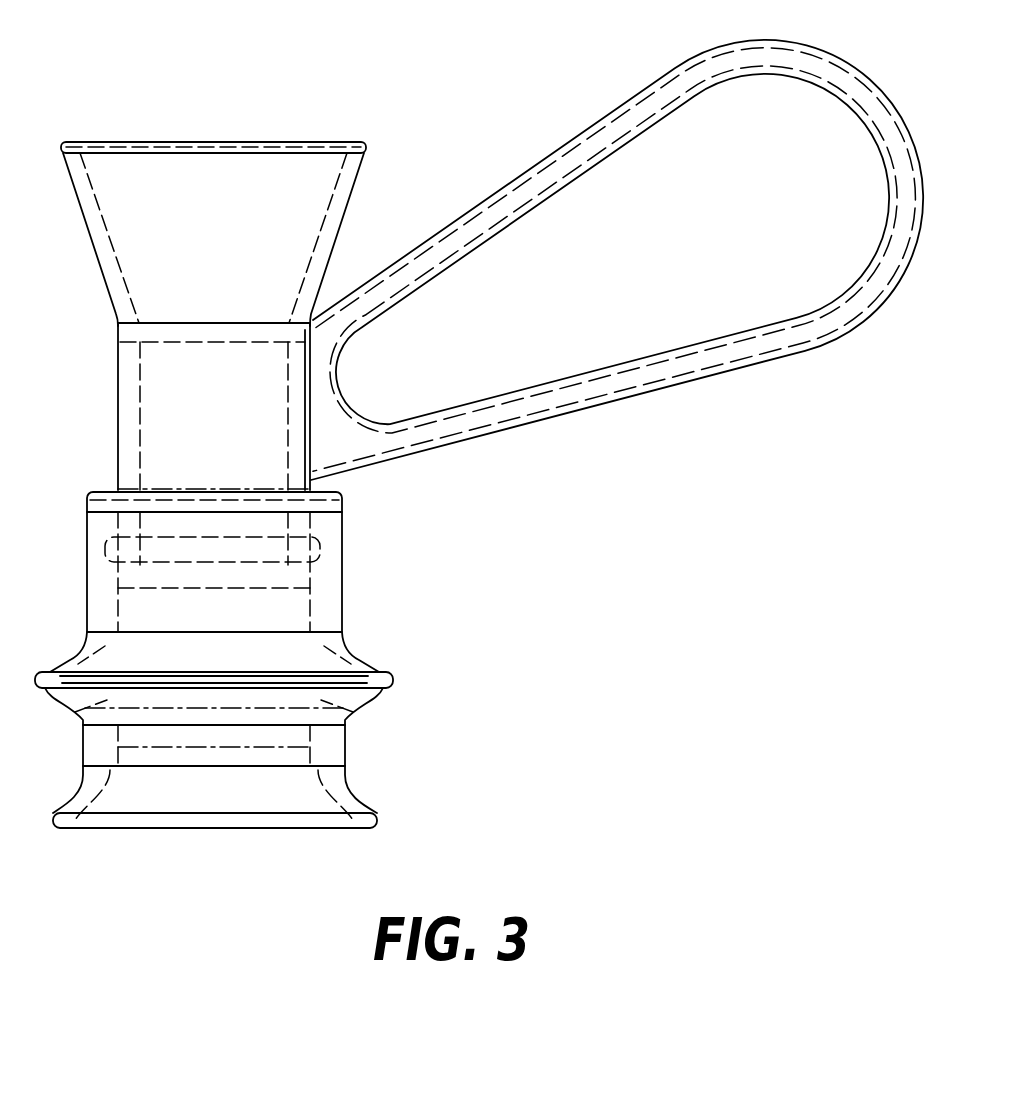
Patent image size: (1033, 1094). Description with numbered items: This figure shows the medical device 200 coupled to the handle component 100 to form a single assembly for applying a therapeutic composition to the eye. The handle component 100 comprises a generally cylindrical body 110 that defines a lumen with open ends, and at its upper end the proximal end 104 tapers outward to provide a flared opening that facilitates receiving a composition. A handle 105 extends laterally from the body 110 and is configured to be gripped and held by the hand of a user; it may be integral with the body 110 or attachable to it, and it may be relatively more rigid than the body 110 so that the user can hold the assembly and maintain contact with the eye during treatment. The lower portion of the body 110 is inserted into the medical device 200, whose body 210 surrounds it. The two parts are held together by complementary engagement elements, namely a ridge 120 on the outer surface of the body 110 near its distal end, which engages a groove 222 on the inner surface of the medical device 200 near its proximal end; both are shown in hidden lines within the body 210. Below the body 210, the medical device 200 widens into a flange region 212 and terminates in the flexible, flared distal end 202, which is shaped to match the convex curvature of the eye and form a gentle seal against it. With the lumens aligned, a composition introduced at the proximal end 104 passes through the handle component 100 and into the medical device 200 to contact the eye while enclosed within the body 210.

The handle component 100 is at (58, 245).
The proximal end 104 is at (72, 142).
The body 110 is at (118, 405).
The handle 105 is at (795, 285).
The medical device 200 is at (54, 590).
The body 210 is at (85, 557).
The ridge 120 is at (313, 557).
The groove 222 is at (212, 549).
The flange 212 is at (393, 683).
The distal end 202 is at (47, 829).